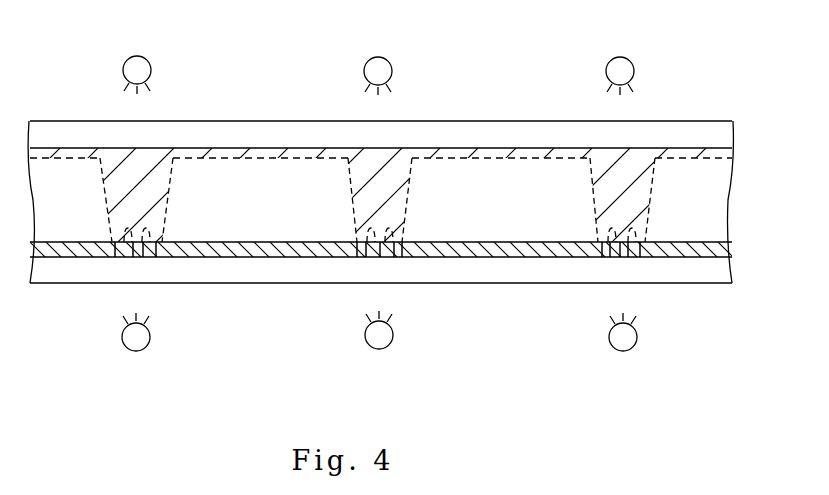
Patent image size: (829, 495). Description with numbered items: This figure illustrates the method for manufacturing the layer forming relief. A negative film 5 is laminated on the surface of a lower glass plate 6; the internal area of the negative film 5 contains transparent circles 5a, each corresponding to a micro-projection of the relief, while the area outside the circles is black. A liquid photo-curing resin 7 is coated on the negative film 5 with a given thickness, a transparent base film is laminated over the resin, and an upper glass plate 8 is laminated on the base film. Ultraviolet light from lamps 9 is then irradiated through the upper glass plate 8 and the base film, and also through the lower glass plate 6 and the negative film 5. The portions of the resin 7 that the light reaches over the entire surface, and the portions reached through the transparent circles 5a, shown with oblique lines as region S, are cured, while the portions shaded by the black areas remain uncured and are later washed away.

The negative film 5 is at (212, 257).
The transparent circles 5a is at (358, 257).
The glass plate 6 is at (300, 275).
The liquid photo-curing resin 7 is at (209, 175).
The glass plate 8 is at (293, 132).
The lamps 9 is at (380, 58).
The sealing material S is at (382, 167).